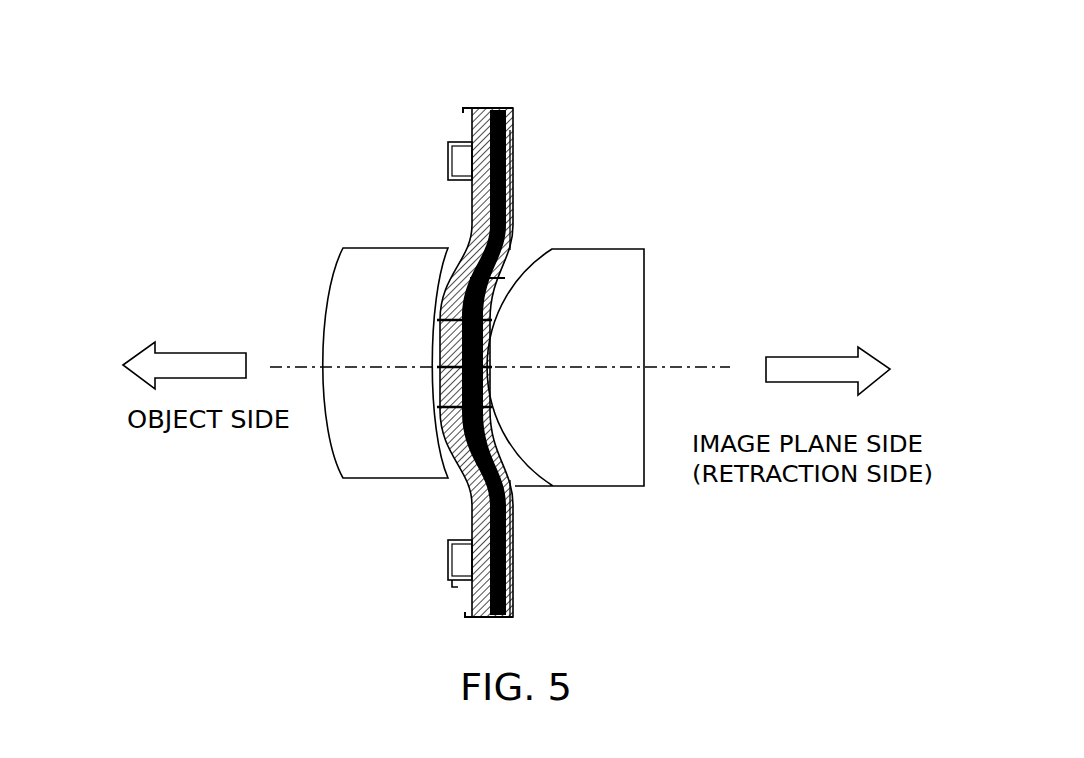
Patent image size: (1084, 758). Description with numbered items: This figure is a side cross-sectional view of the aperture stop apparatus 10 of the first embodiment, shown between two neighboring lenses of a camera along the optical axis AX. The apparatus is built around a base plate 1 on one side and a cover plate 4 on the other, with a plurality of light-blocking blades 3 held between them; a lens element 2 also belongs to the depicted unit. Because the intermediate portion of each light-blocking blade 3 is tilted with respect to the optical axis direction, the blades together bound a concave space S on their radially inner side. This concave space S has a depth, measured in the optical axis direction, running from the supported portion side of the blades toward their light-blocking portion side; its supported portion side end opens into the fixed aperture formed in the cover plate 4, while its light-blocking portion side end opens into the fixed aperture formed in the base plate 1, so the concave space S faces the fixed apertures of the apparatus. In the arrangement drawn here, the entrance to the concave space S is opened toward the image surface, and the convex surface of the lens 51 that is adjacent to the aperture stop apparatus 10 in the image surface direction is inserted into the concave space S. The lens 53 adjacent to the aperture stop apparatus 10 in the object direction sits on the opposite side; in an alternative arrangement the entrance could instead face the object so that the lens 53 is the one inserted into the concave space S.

The aperture stop apparatus 10 is at (435, 83).
The base plate 1 is at (487, 108).
The cover plate 4 is at (475, 362).
The lens element 2 is at (500, 487).
The light-blocking blade 3 is at (497, 447).
The concave space S is at (515, 275).
The lens 51 is at (592, 263).
The lens 53 is at (390, 273).
The optical axis AX is at (696, 368).